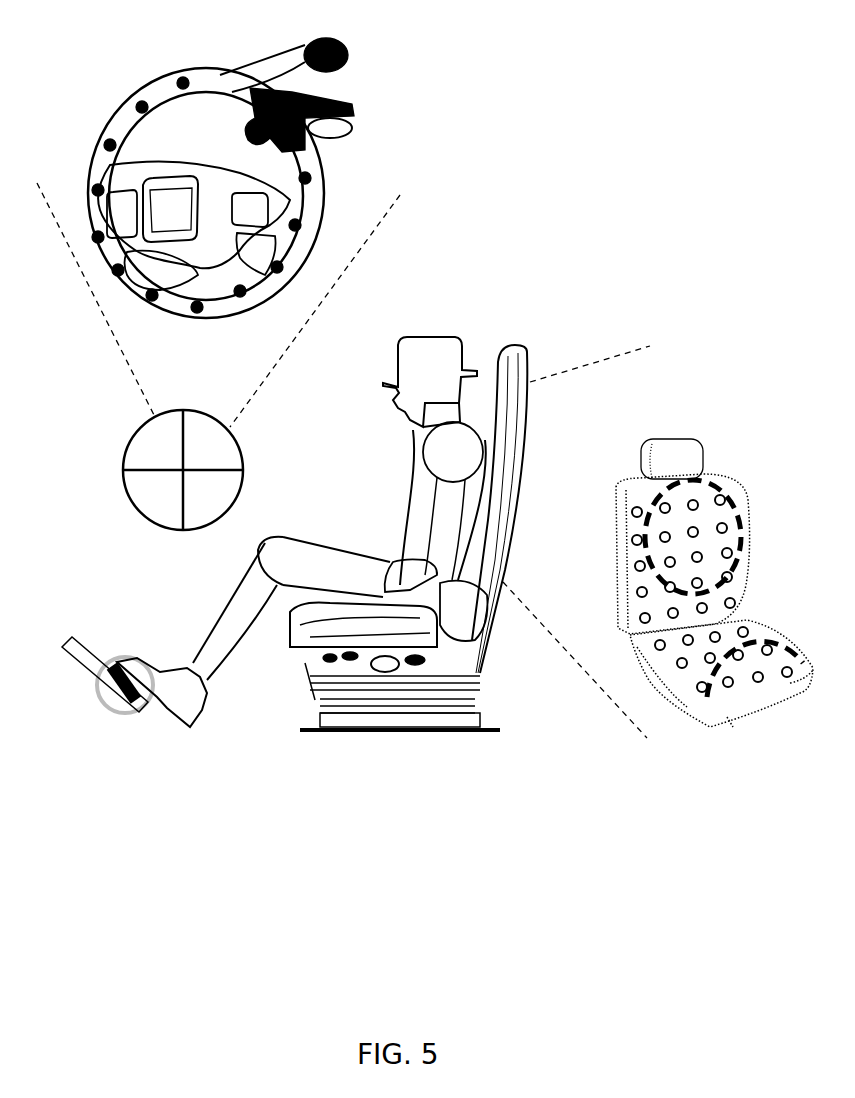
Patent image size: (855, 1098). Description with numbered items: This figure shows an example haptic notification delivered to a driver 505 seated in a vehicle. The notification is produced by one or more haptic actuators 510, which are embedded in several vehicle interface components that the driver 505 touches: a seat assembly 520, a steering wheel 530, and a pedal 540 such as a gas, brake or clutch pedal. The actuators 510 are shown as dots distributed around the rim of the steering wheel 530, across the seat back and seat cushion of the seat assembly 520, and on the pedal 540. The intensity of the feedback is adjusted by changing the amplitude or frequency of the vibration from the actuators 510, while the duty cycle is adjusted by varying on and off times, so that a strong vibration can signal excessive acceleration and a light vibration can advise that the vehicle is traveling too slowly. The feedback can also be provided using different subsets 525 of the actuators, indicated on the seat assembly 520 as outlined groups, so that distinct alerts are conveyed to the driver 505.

The driver 505 is at (400, 347).
The haptic actuators 510 is at (187, 85).
The seat assembly 520 is at (455, 732).
The actuator subsets 525 is at (717, 482).
The steering wheel 530 is at (95, 177).
The pedal 540 is at (95, 675).